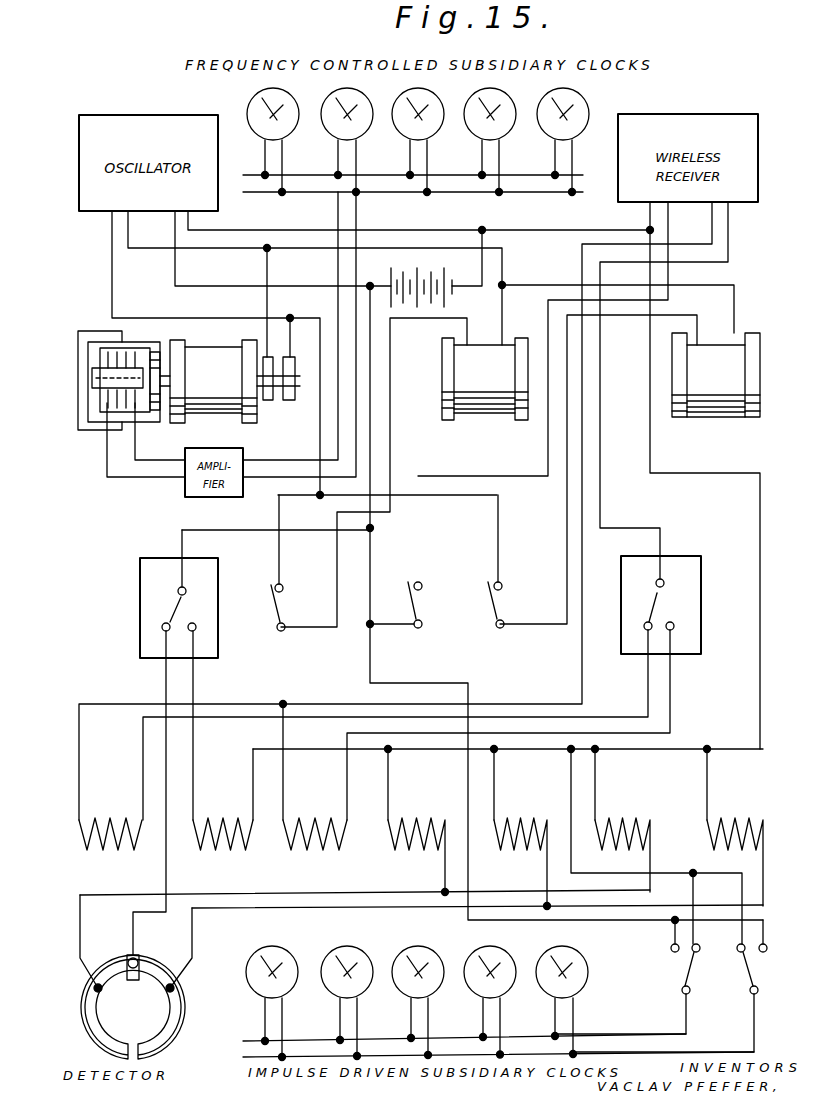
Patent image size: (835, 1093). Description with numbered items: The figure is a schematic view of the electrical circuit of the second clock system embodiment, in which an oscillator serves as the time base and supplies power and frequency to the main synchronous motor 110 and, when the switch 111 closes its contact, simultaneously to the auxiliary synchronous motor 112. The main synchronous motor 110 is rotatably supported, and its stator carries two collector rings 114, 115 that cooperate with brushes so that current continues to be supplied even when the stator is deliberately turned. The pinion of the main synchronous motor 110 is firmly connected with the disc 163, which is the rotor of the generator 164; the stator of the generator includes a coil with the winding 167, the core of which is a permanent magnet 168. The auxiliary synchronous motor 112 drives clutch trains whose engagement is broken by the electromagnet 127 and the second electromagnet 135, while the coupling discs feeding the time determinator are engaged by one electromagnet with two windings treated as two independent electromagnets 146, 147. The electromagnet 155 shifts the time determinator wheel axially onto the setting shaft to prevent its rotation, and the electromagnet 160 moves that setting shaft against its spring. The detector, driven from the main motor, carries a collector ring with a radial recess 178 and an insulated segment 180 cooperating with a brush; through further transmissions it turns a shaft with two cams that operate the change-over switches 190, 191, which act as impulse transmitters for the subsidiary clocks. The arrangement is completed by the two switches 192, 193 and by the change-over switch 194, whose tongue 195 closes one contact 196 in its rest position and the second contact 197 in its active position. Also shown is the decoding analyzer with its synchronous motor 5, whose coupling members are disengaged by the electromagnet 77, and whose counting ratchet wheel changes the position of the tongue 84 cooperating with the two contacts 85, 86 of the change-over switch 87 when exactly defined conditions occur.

The synchronous motor 5 is at (711, 346).
The electromagnet 77 is at (104, 821).
The tongue 84 is at (660, 596).
The contact 85 is at (645, 631).
The contact 86 is at (675, 626).
The change-over switch 87 is at (685, 562).
The main synchronous motor 110 is at (222, 340).
The switch 111 is at (283, 603).
The auxiliary synchronous motor 112 is at (478, 351).
The collector ring 114 is at (268, 402).
The collector ring 115 is at (292, 402).
The electromagnet 127 is at (416, 822).
The second electromagnet 135 is at (524, 822).
The electromagnet 146 is at (632, 822).
The electromagnet 147 is at (750, 822).
The electromagnet 155 is at (218, 822).
The electromagnet 160 is at (311, 822).
The disc 163 is at (160, 410).
The generator 164 is at (80, 345).
The winding 167 is at (98, 398).
The permanent magnet 168 is at (92, 379).
The radial recess 178 is at (119, 977).
The segment 180 is at (90, 1030).
The change-over switch 190 is at (688, 968).
The change-over switch 191 is at (757, 968).
The switch 192 is at (501, 602).
The switch 193 is at (419, 603).
The change-over switch 194 is at (197, 570).
The tongue 195 is at (178, 609).
The contact 196 is at (161, 628).
The second contact 197 is at (196, 630).